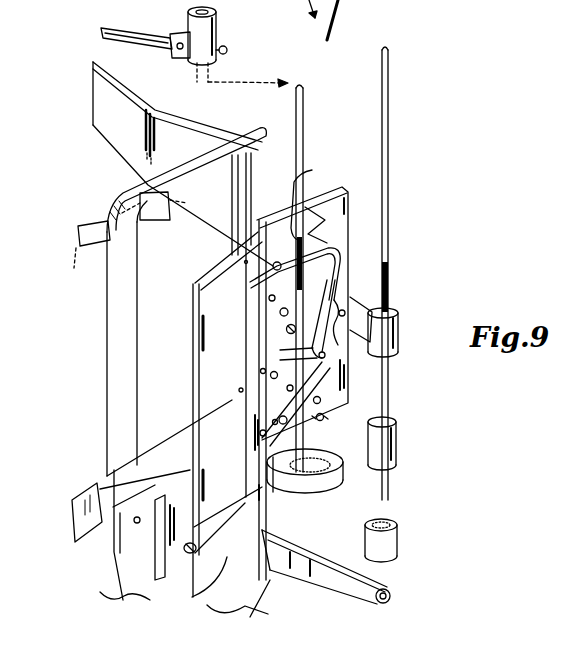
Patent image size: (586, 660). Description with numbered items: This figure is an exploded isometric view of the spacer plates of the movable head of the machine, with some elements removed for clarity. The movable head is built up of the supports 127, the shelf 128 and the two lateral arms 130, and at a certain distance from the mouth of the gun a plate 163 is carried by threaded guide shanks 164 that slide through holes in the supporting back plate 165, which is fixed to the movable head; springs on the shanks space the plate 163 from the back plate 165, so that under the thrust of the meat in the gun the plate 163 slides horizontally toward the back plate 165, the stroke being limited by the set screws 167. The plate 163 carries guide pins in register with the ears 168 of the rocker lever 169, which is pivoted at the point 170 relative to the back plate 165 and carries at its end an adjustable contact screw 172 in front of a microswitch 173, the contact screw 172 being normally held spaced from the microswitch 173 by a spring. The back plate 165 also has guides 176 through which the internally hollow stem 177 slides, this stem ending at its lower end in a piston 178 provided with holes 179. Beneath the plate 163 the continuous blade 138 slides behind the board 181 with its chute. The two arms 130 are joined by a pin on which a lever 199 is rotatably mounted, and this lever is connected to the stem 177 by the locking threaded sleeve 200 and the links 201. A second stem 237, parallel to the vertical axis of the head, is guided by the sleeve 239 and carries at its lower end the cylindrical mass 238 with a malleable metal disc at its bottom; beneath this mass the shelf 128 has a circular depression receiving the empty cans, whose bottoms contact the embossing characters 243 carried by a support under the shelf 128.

The support 127 is at (313, 582).
The shelf 128 is at (517, 5).
The arm 130 is at (213, 118).
The continuous blade 138 is at (90, 537).
The plate 163 is at (303, 175).
The threaded guide shank 164 is at (279, 312).
The supporting back plate 165 is at (346, 197).
The set screw 167 is at (285, 330).
The ear 168 is at (252, 400).
The rocker lever 169 is at (341, 262).
The pivot point 170 is at (269, 375).
The adjustable contact screw 172 is at (275, 262).
The microswitch 173 is at (336, 292).
The guide 176 is at (268, 295).
The stem 177 is at (306, 117).
The piston 178 is at (340, 474).
The hole 179 is at (309, 492).
The board 181 is at (163, 492).
The lever 199 is at (145, 44).
The locking threaded sleeve 200 is at (217, 33).
The link 201 is at (189, 30).
The stem 237 is at (390, 163).
The cylindrical mass 238 is at (398, 440).
The sleeve 239 is at (398, 317).
The embossing characters 243 is at (394, 523).